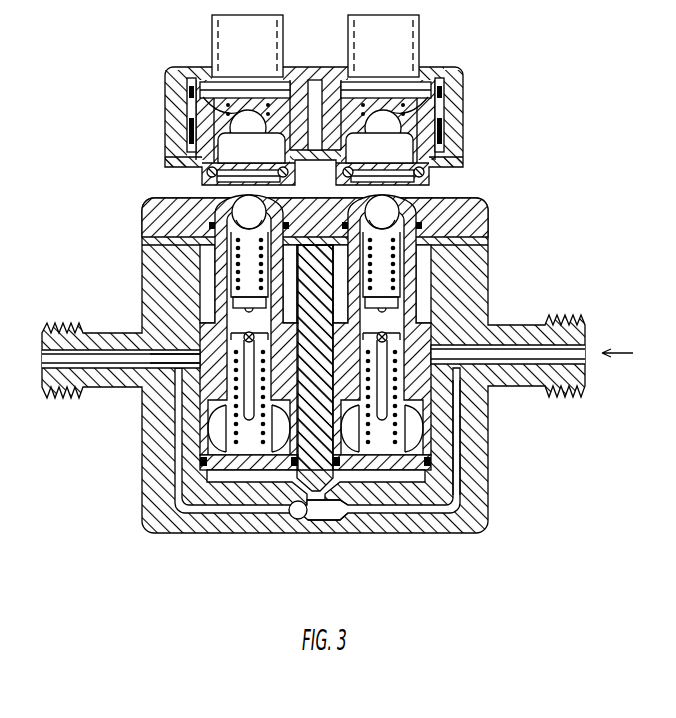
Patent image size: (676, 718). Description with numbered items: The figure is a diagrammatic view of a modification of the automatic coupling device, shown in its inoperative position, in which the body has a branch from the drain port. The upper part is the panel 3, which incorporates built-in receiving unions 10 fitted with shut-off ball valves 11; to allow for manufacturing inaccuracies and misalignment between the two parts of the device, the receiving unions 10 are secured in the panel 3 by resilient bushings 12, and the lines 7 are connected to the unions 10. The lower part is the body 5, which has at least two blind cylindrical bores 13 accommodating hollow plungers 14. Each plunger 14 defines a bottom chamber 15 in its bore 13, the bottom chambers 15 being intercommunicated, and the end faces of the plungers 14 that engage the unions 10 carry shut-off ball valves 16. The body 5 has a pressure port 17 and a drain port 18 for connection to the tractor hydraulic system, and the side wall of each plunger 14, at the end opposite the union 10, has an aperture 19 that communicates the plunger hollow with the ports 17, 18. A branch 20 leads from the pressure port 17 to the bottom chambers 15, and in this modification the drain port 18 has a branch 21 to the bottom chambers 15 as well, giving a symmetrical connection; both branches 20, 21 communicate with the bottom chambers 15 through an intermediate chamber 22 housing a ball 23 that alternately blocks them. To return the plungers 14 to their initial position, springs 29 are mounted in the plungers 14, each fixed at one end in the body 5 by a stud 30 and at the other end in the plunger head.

The panel 3 is at (455, 117).
The body 5 is at (170, 393).
The lines 7 is at (365, 40).
The receiving unions 10 is at (205, 110).
The shut-off ball valves 11 is at (243, 120).
The resilient bushings 12 is at (202, 125).
The blind cylindrical bores 13 is at (207, 262).
The hollow plungers 14 is at (215, 287).
The bottom chambers 15 is at (418, 482).
The shut-off ball valves 16 is at (240, 203).
The pressure port 17 is at (523, 353).
The drain port 18 is at (100, 333).
The aperture 19 is at (202, 463).
The branch 20 is at (457, 452).
The branch 21 is at (178, 493).
The intermediate chamber 22 is at (333, 515).
The ball 23 is at (296, 517).
The springs 29 is at (228, 427).
The stud 30 is at (200, 358).